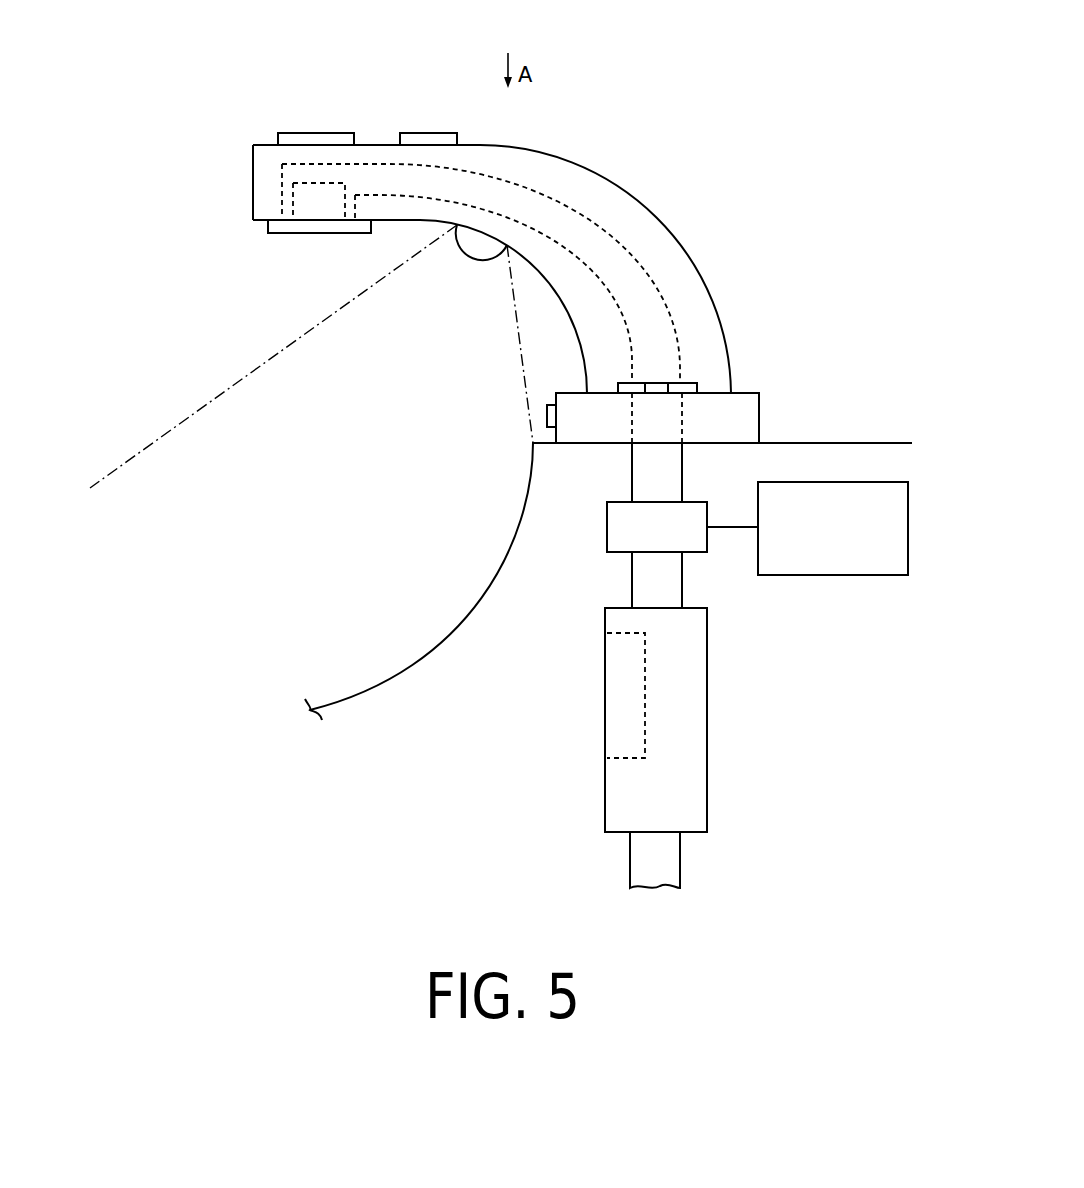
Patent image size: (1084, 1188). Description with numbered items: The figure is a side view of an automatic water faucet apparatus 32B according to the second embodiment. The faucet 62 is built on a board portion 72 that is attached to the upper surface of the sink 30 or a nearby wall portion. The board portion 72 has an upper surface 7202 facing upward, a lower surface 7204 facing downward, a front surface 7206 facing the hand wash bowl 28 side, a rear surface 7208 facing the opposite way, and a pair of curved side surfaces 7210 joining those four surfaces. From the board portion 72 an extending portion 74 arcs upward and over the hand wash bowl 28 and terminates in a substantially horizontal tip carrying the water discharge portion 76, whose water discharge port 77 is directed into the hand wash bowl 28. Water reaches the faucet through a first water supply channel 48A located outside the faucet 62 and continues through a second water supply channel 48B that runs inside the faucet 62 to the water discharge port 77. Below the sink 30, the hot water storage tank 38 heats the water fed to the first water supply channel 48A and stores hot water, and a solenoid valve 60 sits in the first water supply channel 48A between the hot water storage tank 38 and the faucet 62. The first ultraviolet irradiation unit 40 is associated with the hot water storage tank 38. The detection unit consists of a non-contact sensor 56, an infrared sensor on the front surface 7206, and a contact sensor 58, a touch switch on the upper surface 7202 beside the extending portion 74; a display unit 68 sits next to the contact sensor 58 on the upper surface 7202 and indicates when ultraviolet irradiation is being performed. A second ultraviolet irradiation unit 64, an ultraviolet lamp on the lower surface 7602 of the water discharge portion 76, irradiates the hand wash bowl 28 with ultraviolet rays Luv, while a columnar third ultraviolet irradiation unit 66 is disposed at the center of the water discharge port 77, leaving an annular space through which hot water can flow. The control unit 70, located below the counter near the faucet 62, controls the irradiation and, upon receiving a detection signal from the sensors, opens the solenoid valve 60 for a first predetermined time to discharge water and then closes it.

The automatic water faucet apparatus 32B is at (447, 75).
The water discharge portion 76 is at (253, 184).
The water discharge port 77 is at (310, 233).
The third ultraviolet irradiation unit 66 is at (323, 183).
The lower surface 7602 is at (383, 221).
The second ultraviolet irradiation unit 64 is at (477, 260).
The ultraviolet rays Luv is at (223, 392).
The second water supply channel 48B is at (586, 222).
The faucet 62 is at (659, 193).
The extending portion 74 is at (680, 242).
The display unit 68 is at (657, 383).
The contact sensor 58 is at (693, 383).
The upper surface 7202 is at (615, 392).
The board portion 72 is at (728, 392).
The curved side surfaces 7210 is at (707, 407).
The rear surface 7208 is at (760, 417).
The front surface 7206 is at (556, 438).
The lower surface 7204 is at (582, 448).
The non-contact sensor 56 is at (547, 417).
The sink 30 is at (843, 443).
The first water supply channel 48A is at (682, 475).
The solenoid valve 60 is at (620, 552).
The control unit 70 is at (870, 575).
The hot water storage tank 38 is at (707, 656).
The first ultraviolet irradiation unit 40 is at (627, 633).
The hand wash bowl 28 is at (488, 585).